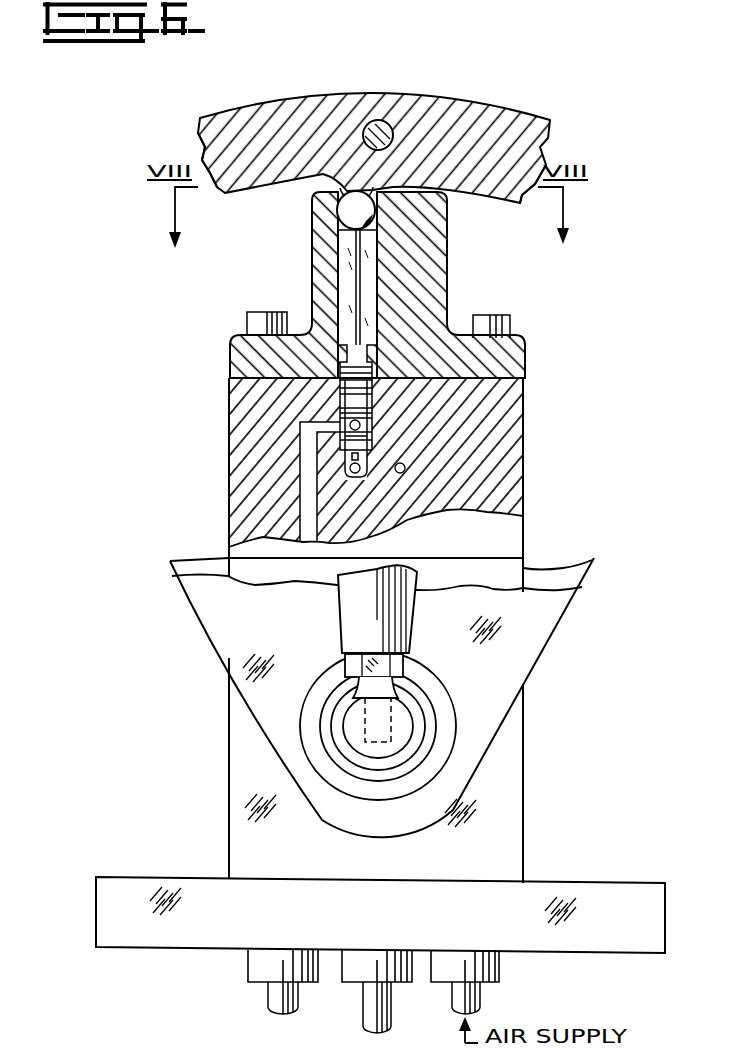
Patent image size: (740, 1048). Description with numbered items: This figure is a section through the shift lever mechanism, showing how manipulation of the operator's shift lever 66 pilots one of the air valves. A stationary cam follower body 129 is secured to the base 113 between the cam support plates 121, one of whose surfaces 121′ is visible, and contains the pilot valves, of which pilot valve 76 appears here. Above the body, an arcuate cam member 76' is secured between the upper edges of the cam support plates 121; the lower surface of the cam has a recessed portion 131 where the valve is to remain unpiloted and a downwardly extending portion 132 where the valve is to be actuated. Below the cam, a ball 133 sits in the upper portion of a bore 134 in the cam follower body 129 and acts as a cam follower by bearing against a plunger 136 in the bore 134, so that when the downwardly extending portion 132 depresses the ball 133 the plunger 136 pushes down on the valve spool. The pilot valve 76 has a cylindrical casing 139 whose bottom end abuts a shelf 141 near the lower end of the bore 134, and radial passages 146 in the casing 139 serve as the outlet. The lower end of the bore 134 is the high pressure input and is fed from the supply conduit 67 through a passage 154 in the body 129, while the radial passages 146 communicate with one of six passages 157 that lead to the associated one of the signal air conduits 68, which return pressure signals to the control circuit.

The arcuate cam member 76' is at (374, 130).
The recessed portion 131 is at (244, 192).
The downwardly extending portion 132 is at (482, 197).
The ball 133 is at (351, 196).
The bore 134 is at (370, 197).
The plunger 136 is at (340, 262).
The cam follower body 129 is at (437, 293).
The cylindrical casing 139 is at (350, 392).
The pilot valve 76 is at (397, 428).
The shelf 141 is at (347, 437).
The radial passages 146 is at (359, 428).
The passages 157 is at (302, 467).
The passage 154 is at (357, 474).
The base 113 is at (523, 848).
The upper face of wedge 121′ is at (566, 569).
The cam support plates 121 is at (549, 626).
The shift lever 66 is at (347, 608).
The air conduits 68 is at (268, 1002).
The supply conduit 67 is at (455, 1004).